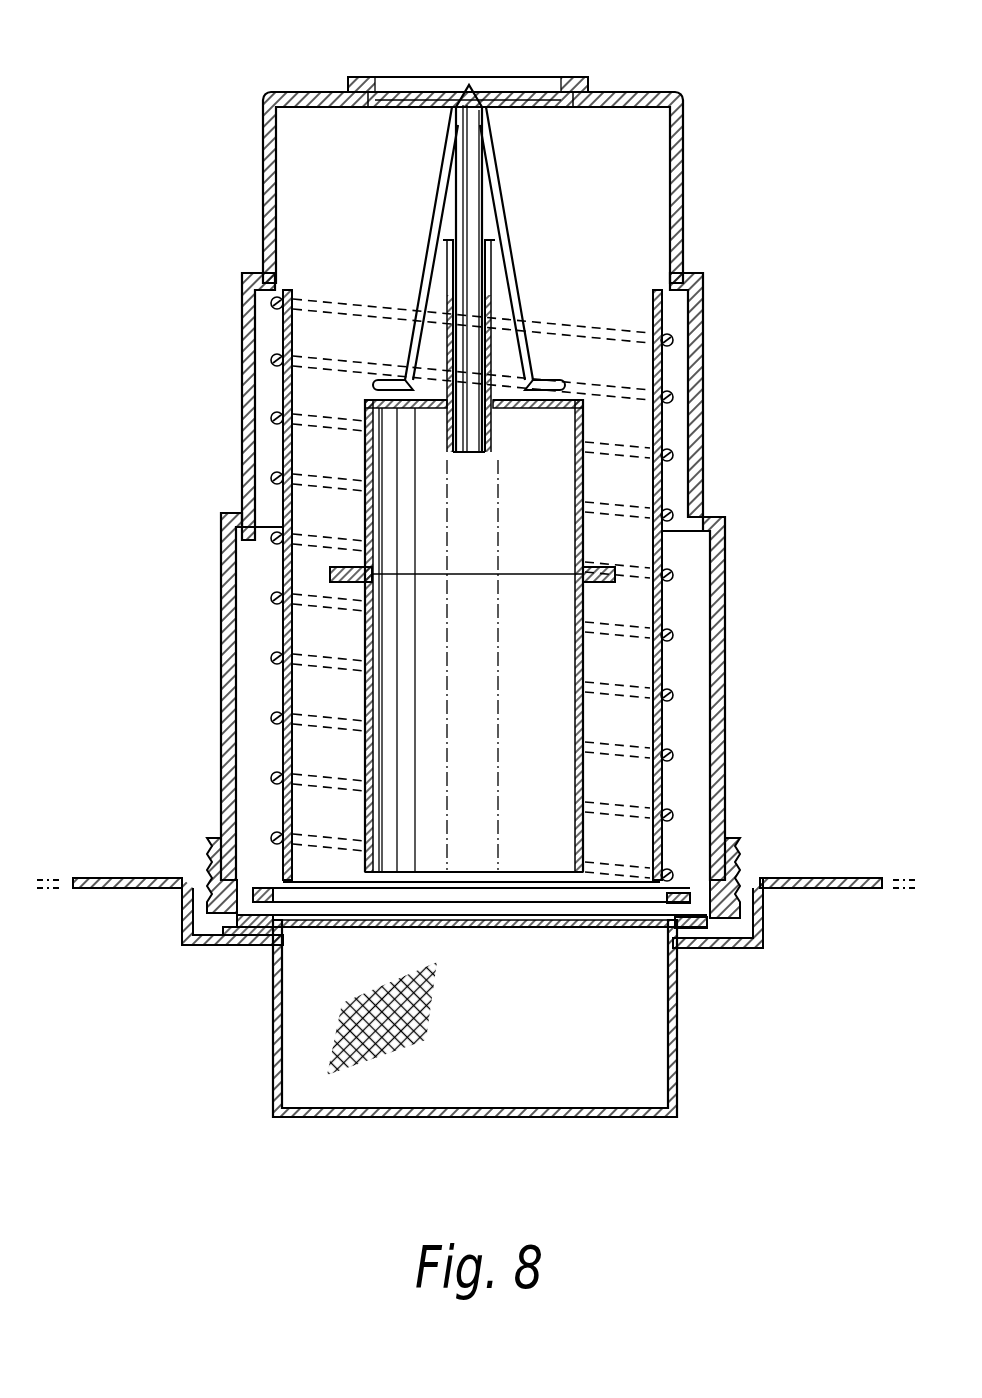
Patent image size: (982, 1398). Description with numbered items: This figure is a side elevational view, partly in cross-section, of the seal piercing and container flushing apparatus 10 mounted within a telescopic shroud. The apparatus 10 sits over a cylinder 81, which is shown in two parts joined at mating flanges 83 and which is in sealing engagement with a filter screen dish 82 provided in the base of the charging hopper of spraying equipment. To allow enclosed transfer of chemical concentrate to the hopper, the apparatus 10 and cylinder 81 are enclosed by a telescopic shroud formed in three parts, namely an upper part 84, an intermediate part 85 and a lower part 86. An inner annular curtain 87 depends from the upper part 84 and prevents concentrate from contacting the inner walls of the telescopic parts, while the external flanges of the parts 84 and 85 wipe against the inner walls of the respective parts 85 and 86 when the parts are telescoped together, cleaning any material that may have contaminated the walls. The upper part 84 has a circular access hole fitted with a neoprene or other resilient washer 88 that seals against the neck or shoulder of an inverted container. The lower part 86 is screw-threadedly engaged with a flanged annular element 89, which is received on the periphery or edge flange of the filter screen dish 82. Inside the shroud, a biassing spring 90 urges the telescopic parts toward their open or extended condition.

The apparatus 10 is at (500, 185).
The cylinder 81 is at (583, 474).
The filter screen dish 82 is at (378, 1055).
The mating flanges 83 is at (615, 583).
The upper part of telescopic shroud 84 is at (263, 171).
The middle part of telescopic shroud 85 is at (242, 363).
The lower part of telescopic shroud 86 is at (221, 620).
The inner annular curtain 87 is at (662, 372).
The resilient washer 88 is at (365, 77).
The flanged annular element 89 is at (740, 855).
The spring 90 is at (615, 695).